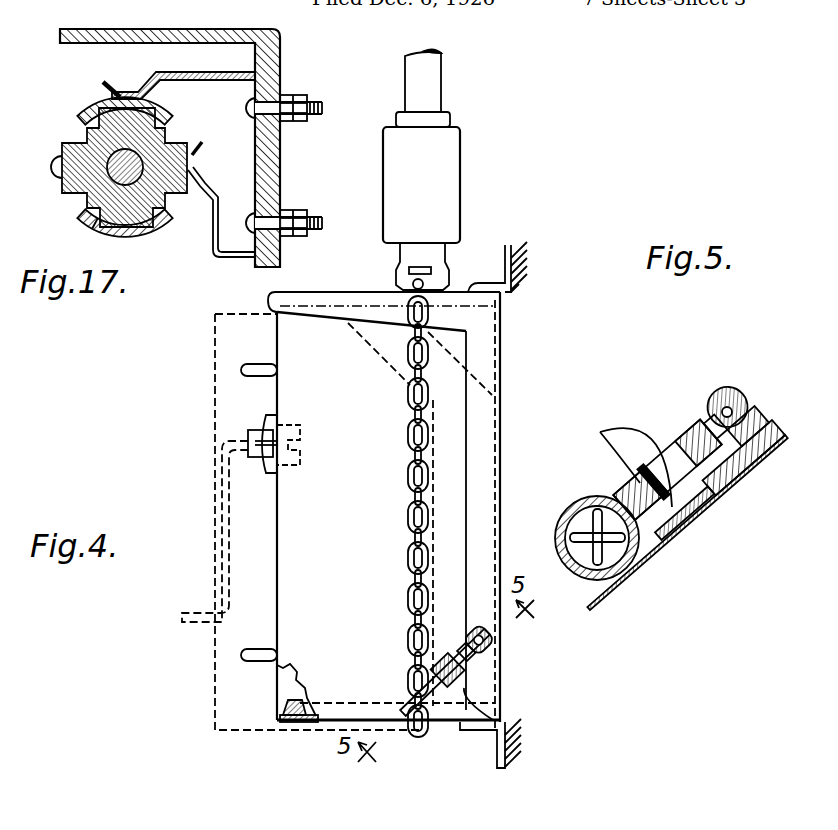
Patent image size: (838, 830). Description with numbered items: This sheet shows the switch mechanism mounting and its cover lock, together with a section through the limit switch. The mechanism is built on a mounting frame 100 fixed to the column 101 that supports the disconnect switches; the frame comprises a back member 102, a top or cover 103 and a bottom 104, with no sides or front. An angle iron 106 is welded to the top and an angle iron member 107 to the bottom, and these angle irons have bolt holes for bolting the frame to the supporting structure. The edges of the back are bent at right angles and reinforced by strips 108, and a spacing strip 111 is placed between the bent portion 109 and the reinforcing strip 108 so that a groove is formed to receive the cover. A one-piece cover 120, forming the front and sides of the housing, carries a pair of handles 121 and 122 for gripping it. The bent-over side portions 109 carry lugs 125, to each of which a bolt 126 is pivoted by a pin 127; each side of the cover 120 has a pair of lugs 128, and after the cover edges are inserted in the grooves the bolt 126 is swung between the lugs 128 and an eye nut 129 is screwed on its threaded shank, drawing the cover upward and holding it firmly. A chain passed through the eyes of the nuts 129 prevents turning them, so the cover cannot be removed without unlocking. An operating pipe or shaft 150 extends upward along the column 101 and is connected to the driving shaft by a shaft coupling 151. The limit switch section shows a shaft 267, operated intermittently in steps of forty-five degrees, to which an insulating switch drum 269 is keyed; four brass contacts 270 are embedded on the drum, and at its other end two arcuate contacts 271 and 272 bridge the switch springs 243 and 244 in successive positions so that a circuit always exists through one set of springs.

In FIG. 4, the mounting frame 100 is at (510, 442).
In FIG. 4, the column 101 is at (520, 262).
In FIG. 4, the back member 102 is at (502, 367).
In FIG. 4, the top or cover 103 is at (372, 290).
In FIG. 4, the bottom 104 is at (300, 722).
In FIG. 4, the angle iron 106 is at (498, 283).
In FIG. 4, the angle iron member 107 is at (497, 752).
In FIG. 5, the reinforcing strip 108 is at (720, 510).
In FIG. 4, the bent portion 109 is at (476, 480).
In FIG. 5, the bent portion 109 is at (768, 425).
In FIG. 5, the spacing strip 111 is at (786, 432).
In FIG. 4, the cover 120 is at (290, 617).
In FIG. 5, the cover 120 is at (634, 584).
In FIG. 4, the handle 121 is at (243, 663).
In FIG. 4, the handle 122 is at (241, 371).
In FIG. 4, the lug 125 is at (490, 632).
In FIG. 5, the lug 125 is at (734, 403).
In FIG. 4, the bolt 126 is at (445, 665).
In FIG. 5, the bolt 126 is at (688, 438).
In FIG. 5, the pin 127 is at (728, 398).
In FIG. 4, the lug 128 is at (460, 680).
In FIG. 5, the lug 128 is at (630, 437).
In FIG. 5, the eye nut 129 is at (567, 497).
In FIG. 4, the operating pipe or shaft 150 is at (426, 85).
In FIG. 4, the shaft coupling 151 is at (446, 172).
In FIG. 17, the switch spring 243 is at (186, 80).
In FIG. 17, the switch spring 244 is at (250, 182).
In FIG. 17, the shaft 267 is at (75, 196).
In FIG. 17, the switch drum 269 is at (90, 228).
In FIG. 17, the brass contact 270 is at (58, 158).
In FIG. 17, the arcuate contact 271 is at (88, 108).
In FIG. 17, the arcuate contact 272 is at (152, 232).